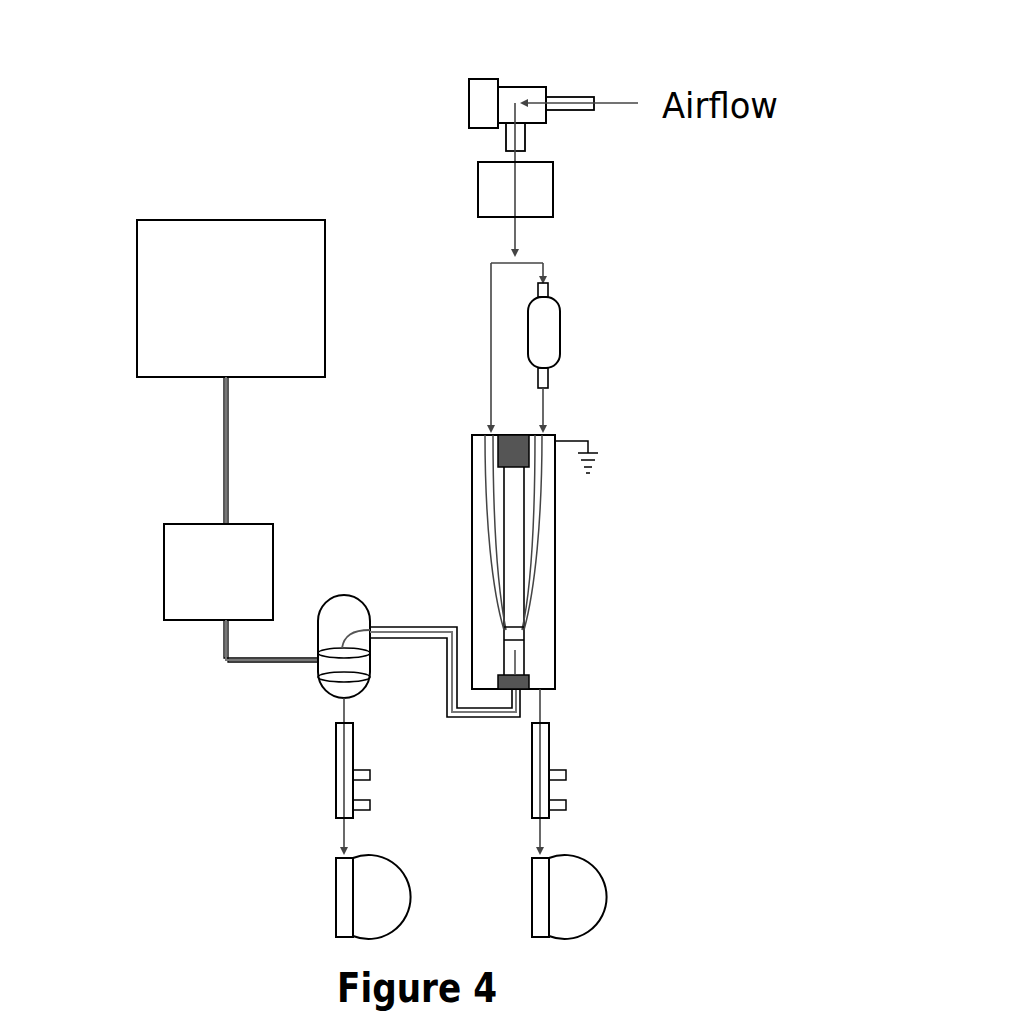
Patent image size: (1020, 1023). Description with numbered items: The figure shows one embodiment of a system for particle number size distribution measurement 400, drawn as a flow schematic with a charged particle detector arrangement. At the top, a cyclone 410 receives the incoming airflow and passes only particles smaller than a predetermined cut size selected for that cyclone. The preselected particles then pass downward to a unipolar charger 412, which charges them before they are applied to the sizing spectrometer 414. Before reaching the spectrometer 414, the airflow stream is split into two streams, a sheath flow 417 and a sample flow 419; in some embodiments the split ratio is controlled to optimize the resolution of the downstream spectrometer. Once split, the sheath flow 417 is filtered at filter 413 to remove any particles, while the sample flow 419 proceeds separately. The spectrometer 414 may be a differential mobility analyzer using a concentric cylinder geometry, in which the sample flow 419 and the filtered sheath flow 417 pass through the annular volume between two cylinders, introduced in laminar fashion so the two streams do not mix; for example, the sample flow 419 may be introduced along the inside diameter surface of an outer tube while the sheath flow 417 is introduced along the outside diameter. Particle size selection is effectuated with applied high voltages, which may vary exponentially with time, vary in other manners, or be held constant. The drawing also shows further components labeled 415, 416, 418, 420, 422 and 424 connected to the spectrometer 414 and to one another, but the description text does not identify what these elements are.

The system for particle number size distribution measurement 400 is at (219, 100).
The cyclone 410 is at (540, 92).
The unipolar charger 412 is at (546, 195).
The filter 413 is at (550, 350).
The sizing spectrometer 414 is at (557, 562).
The inner tube outlet 415 is at (525, 662).
The liquid vessel 416 is at (338, 610).
The sheath flow 417 is at (545, 415).
The pump unit 418 is at (197, 553).
The sample flow 419 is at (491, 370).
The controller 420 is at (198, 238).
The outlet valve 422 is at (567, 892).
The outlet valve 424 is at (350, 780).